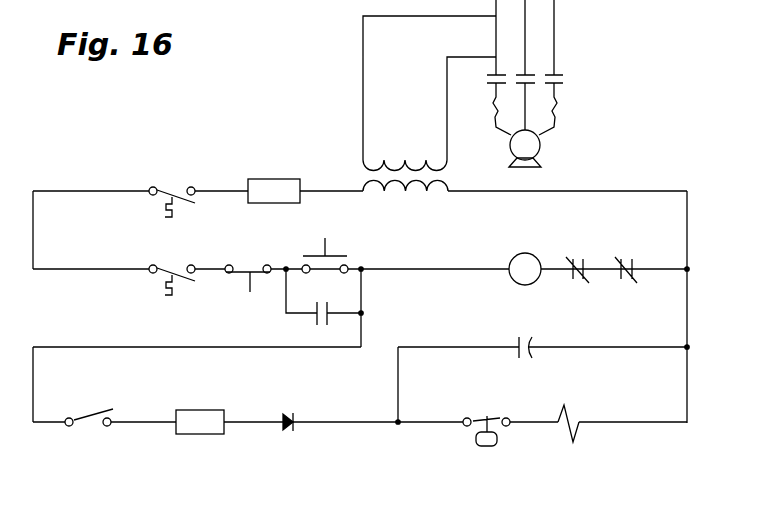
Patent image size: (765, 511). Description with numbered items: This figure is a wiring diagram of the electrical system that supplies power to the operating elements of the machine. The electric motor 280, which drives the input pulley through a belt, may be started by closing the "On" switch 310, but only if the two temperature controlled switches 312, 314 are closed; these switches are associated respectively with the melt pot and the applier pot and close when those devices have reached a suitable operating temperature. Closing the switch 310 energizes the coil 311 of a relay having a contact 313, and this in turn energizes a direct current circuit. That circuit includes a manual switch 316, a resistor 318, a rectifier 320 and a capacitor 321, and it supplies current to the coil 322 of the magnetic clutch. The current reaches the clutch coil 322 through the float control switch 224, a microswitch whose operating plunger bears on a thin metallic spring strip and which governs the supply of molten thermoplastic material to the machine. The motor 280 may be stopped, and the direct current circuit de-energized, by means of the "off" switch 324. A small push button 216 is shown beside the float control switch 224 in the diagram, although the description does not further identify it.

The electric motor 280 is at (540, 146).
The temperature controlled switch 312 is at (173, 197).
The temperature controlled switch 314 is at (173, 275).
The off switch 324 is at (243, 268).
The on switch 310 is at (332, 256).
The relay contact 313 is at (312, 315).
The relay coil 311 is at (512, 258).
The capacitor 321 is at (530, 345).
The manual switch 316 is at (92, 410).
The resistor 318 is at (185, 410).
The rectifier 320 is at (287, 412).
The float control switch 224 is at (491, 415).
The push button 216 is at (477, 438).
The clutch coil 322 is at (567, 417).